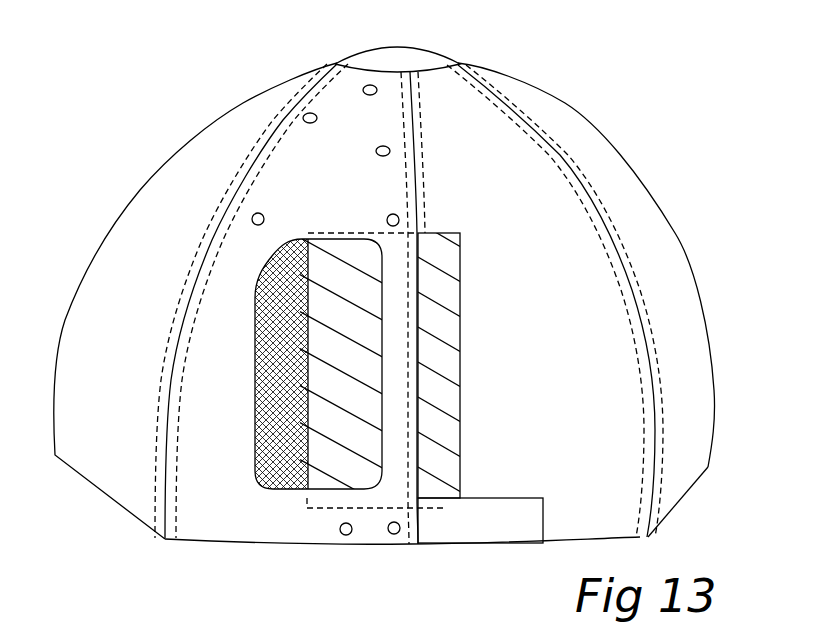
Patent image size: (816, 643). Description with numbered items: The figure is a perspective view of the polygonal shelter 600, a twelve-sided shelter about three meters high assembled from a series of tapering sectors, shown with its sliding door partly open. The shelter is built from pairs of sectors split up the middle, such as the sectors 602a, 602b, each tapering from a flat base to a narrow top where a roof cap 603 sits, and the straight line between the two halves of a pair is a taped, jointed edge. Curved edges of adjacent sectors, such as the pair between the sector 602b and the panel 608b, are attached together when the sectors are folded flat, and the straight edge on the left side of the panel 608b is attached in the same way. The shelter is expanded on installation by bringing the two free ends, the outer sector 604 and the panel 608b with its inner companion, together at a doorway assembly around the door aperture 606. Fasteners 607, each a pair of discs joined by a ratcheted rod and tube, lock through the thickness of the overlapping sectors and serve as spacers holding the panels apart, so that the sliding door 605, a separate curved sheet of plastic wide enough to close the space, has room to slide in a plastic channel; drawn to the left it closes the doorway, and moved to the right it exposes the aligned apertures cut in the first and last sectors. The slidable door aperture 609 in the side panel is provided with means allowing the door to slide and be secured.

The polygonal shelter 600 is at (137, 112).
The sector 602a is at (667, 498).
The sector 602b is at (643, 217).
The roof cap 603 is at (436, 52).
The outer sector 604 is at (251, 301).
The sliding door 605 is at (459, 234).
The door aperture 606 is at (285, 482).
The fastener 607 is at (258, 213).
The panel 608b is at (471, 308).
The slidable door aperture 609 is at (479, 522).